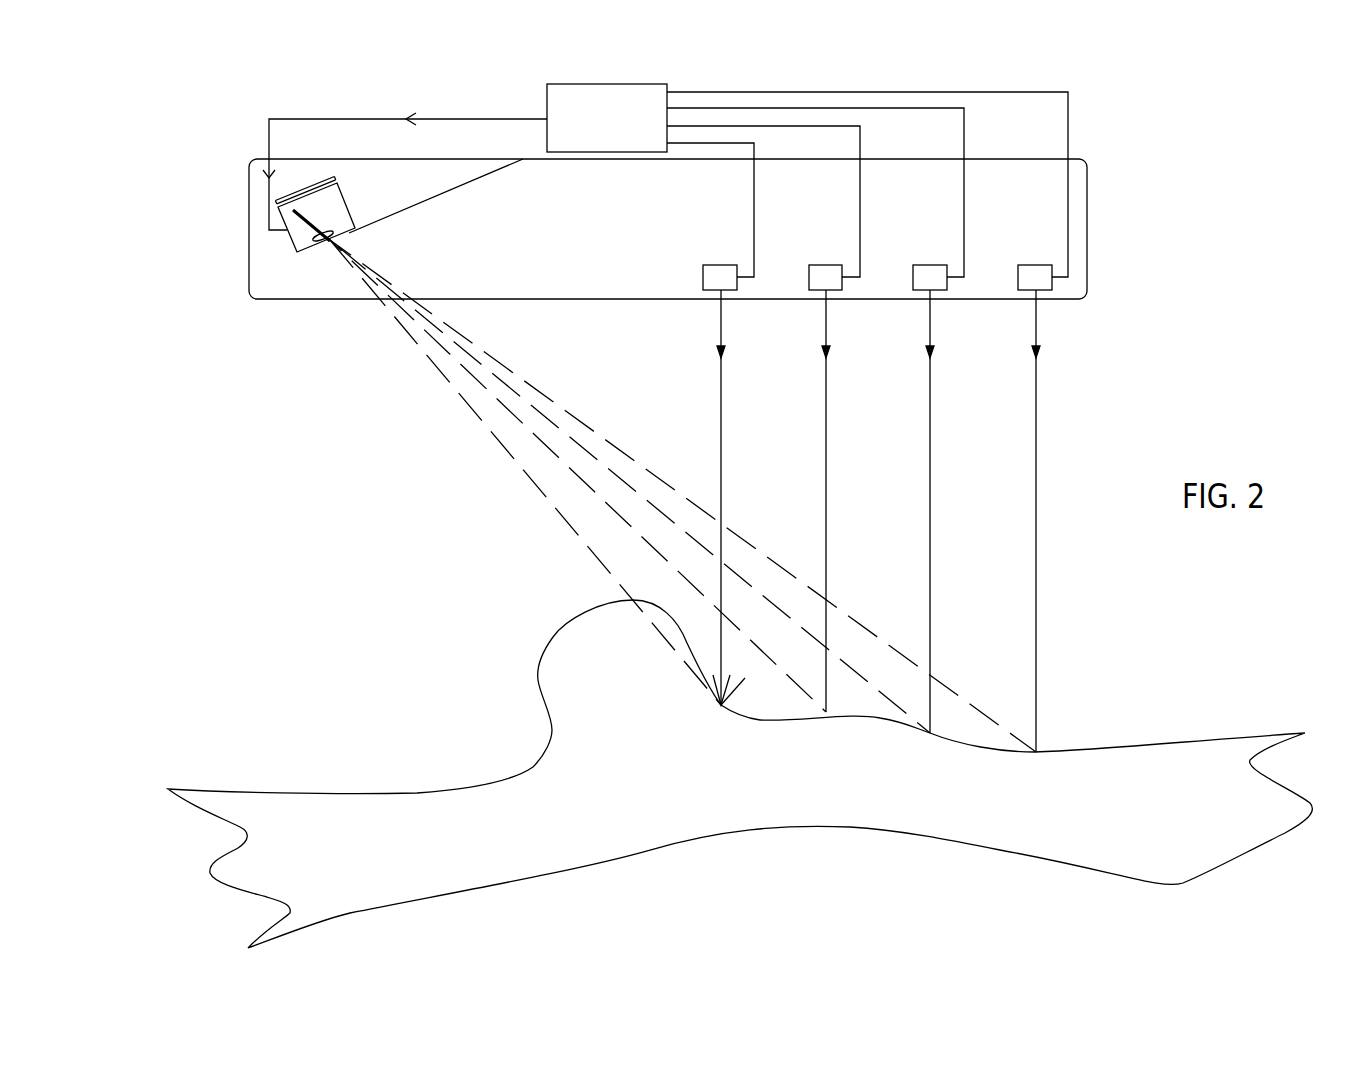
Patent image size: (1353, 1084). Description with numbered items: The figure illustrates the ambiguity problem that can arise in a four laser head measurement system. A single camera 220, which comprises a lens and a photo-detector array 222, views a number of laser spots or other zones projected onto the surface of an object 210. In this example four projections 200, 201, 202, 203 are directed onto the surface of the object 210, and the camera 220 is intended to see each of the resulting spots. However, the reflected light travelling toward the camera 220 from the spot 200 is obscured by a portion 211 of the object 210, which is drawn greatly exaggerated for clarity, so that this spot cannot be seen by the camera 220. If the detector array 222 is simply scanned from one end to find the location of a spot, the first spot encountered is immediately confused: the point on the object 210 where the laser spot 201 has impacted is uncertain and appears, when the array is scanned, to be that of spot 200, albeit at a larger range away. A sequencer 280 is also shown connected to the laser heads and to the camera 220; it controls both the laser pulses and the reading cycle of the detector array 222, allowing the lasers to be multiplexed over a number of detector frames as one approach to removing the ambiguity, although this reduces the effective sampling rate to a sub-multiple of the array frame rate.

The sequencer 280 is at (665, 180).
The camera 220 is at (339, 214).
The photo-detector array 222 is at (314, 183).
The laser spot projection 201 is at (647, 481).
The laser spot projection 200 is at (720, 471).
The laser spot projection 202 is at (932, 485).
The laser spot projection 203 is at (1036, 495).
The object 210 is at (740, 832).
The portion of the object 211 is at (634, 666).